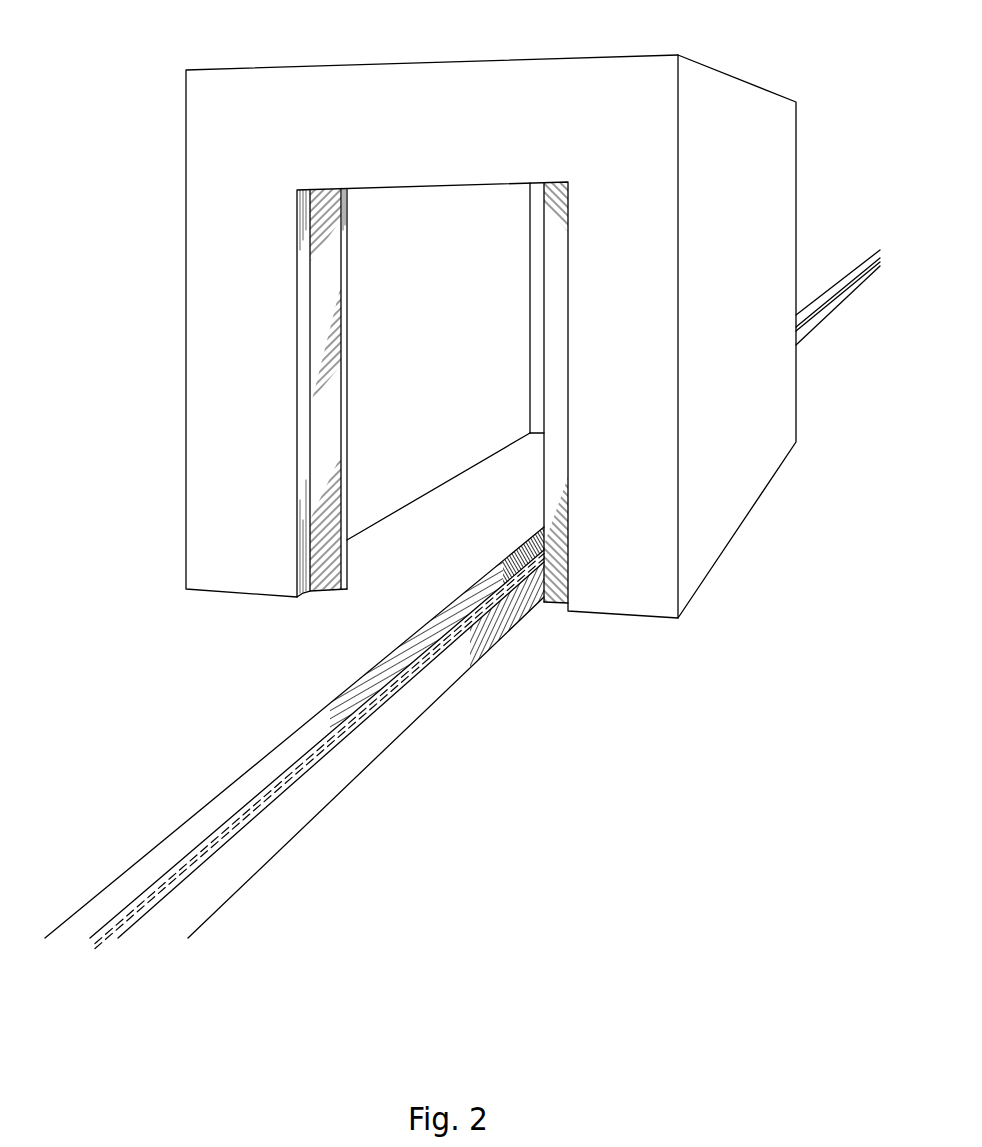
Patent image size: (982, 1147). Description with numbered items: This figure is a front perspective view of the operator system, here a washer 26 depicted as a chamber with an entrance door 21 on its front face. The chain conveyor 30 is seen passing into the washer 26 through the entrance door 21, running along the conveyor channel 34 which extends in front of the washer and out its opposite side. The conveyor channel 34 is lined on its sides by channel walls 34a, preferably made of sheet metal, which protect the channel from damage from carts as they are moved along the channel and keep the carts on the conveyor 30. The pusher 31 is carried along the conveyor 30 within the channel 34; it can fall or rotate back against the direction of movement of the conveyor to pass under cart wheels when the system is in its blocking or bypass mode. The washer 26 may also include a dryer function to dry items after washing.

The housing 26 is at (562, 85).
The entrance door 21 is at (332, 374).
The chain conveyor 30 is at (312, 738).
The pusher 31 is at (338, 722).
The conveyor channel 34 is at (305, 763).
The channel walls 34a is at (402, 702).